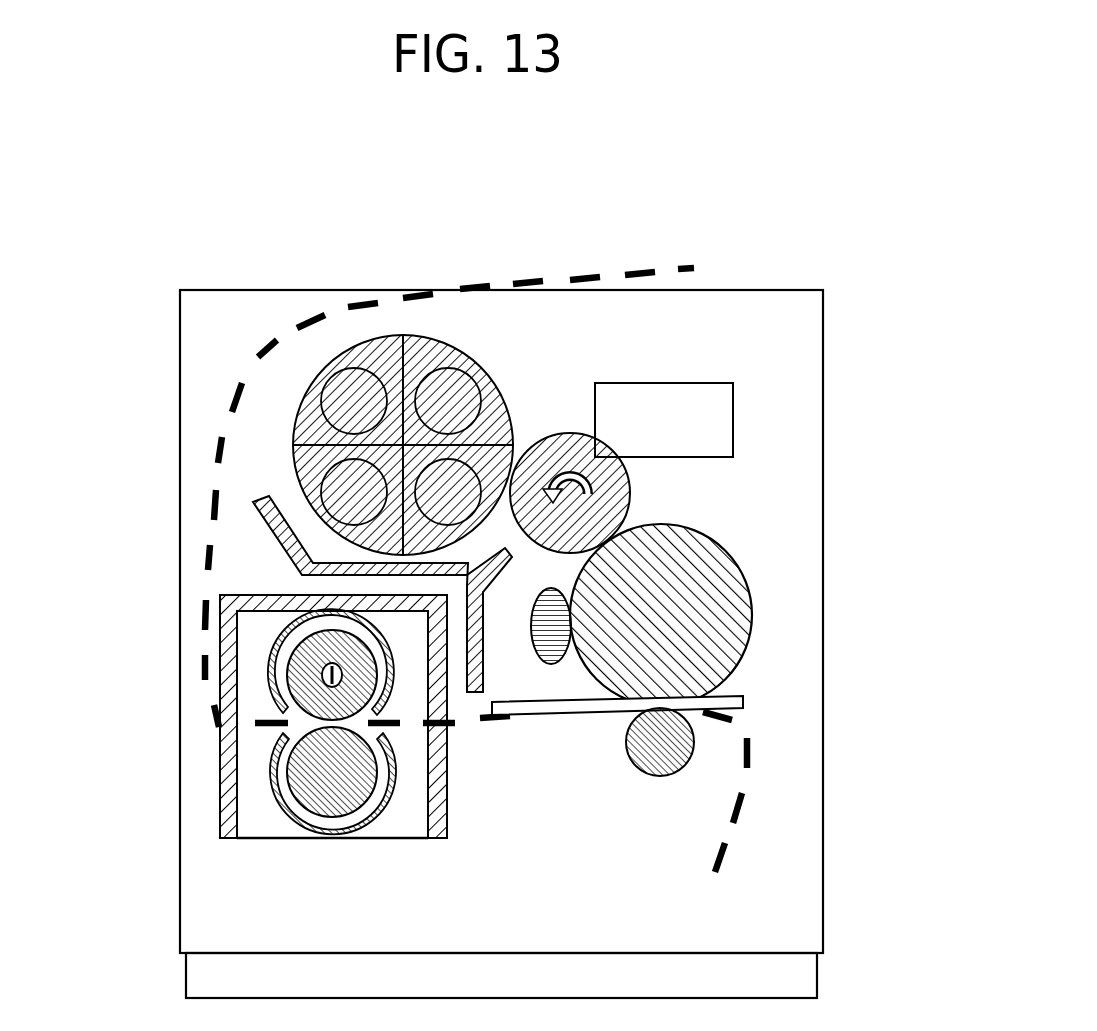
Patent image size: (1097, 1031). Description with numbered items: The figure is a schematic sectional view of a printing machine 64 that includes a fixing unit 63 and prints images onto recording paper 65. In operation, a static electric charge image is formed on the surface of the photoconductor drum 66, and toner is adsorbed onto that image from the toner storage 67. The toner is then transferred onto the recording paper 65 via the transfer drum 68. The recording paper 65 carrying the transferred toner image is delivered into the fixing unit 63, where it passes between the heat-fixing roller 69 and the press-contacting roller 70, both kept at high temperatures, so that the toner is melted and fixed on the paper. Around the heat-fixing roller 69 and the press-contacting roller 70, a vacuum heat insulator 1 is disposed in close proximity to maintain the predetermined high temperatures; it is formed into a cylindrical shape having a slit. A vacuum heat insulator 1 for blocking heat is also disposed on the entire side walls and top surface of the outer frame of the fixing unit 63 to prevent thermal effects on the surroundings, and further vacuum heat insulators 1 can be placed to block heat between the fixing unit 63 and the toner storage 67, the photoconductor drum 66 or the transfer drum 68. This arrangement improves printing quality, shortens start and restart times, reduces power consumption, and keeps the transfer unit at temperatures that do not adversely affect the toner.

The vacuum heat insulator 1 is at (275, 538).
The fixing unit 63 is at (217, 787).
The printing machine 64 is at (333, 263).
The recording paper 65 is at (743, 693).
The photoconductor drum 66 is at (627, 475).
The toner storage 67 is at (490, 373).
The transfer drum 68 is at (737, 560).
The heat-fixing roller 69 is at (300, 664).
The press-contacting roller 70 is at (313, 783).